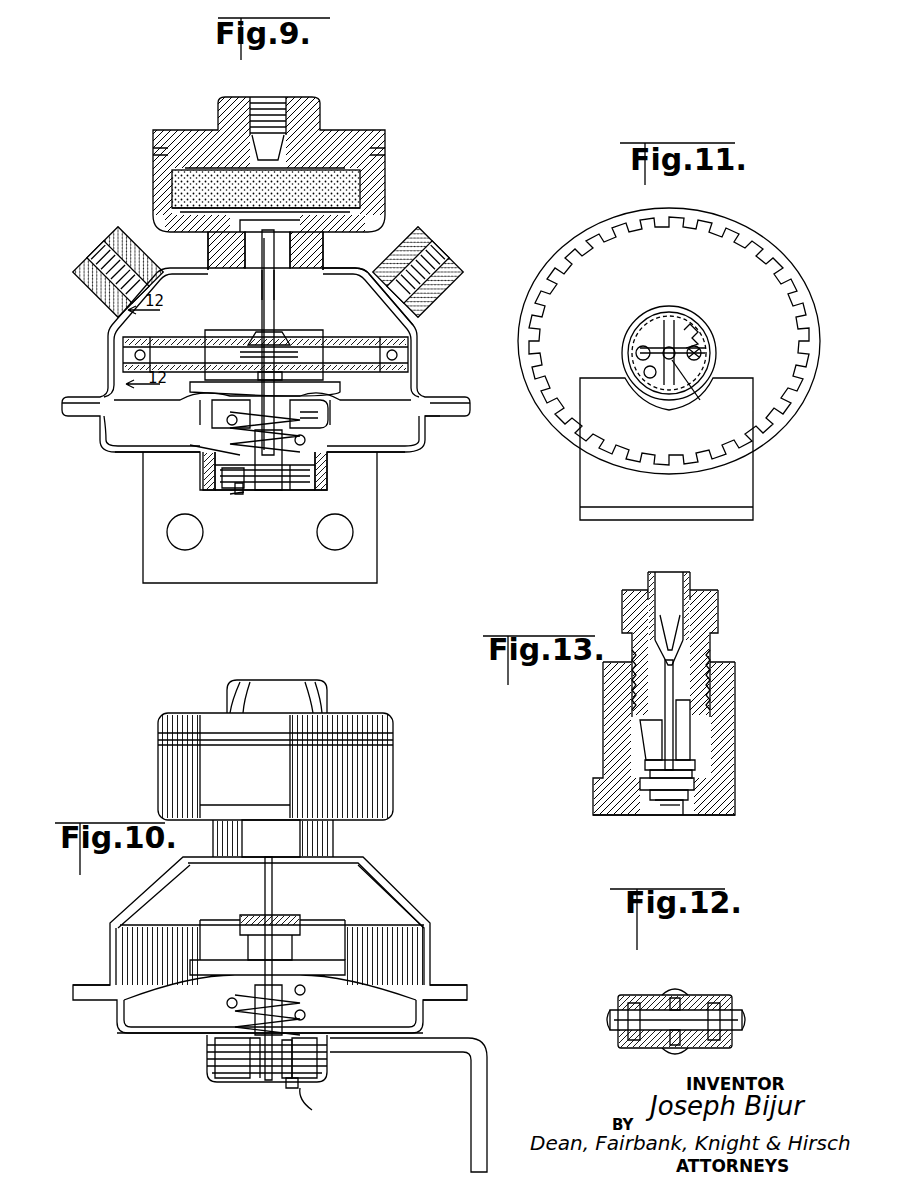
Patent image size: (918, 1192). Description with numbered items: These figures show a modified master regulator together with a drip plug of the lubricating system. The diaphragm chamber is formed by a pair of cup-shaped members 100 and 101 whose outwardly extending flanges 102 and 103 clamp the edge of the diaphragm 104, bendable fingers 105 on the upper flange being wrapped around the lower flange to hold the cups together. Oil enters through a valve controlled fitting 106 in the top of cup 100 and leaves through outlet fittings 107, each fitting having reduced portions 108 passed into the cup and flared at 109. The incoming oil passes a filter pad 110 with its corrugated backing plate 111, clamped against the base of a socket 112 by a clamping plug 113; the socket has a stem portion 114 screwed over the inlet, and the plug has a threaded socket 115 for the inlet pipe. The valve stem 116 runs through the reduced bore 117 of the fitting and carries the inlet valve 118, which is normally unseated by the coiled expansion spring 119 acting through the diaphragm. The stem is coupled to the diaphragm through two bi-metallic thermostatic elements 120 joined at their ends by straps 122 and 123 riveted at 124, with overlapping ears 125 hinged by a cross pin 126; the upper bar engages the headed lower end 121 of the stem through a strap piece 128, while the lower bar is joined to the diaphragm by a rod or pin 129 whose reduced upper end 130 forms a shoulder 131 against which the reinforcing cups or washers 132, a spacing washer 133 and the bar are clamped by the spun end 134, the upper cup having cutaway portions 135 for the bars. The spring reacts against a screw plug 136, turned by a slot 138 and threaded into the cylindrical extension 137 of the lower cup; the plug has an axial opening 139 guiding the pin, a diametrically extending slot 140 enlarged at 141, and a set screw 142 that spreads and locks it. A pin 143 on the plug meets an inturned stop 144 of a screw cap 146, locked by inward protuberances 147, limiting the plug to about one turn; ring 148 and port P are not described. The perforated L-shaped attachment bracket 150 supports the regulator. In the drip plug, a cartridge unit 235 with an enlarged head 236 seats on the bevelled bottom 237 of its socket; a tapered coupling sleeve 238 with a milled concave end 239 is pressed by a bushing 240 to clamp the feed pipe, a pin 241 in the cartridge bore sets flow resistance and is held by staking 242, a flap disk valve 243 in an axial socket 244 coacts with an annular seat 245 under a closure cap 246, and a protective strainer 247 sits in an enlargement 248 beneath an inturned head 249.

In FIG. 9, the cup-shaped member 100 is at (425, 355).
In FIG. 10, the cup-shaped member 100 is at (418, 912).
In FIG. 9, the cup-shaped member 101 is at (405, 450).
In FIG. 10, the cup-shaped member 101 is at (378, 1035).
In FIG. 9, the outwardly extending flange 102 is at (445, 397).
In FIG. 10, the outwardly extending flange 102 is at (458, 988).
In FIG. 9, the outwardly extending flange 103 is at (432, 420).
In FIG. 10, the outwardly extending flange 103 is at (448, 1005).
In FIG. 9, the diaphragm 104 is at (372, 400).
In FIG. 10, the diaphragm 104 is at (350, 985).
In FIG. 11, the bendable fingers 105 is at (798, 286).
In FIG. 9, the valve controlled fitting 106 is at (298, 258).
In FIG. 10, the valve controlled fitting 106 is at (268, 852).
In FIG. 9, the outlet fittings 107 is at (92, 282).
In FIG. 9, the reduced portions 108 is at (365, 300).
In FIG. 9, the flared portion 109 is at (408, 327).
In FIG. 9, the filter pad 110 is at (172, 186).
In FIG. 9, the corrugated backing plate 111 is at (178, 210).
In FIG. 9, the socket 112 is at (372, 218).
In FIG. 10, the socket 112 is at (393, 784).
In FIG. 9, the clamping plug 113 is at (318, 125).
In FIG. 10, the clamping plug 113 is at (330, 697).
In FIG. 9, the stem portion 114 is at (208, 245).
In FIG. 10, the stem portion 114 is at (334, 845).
In FIG. 9, the threaded socket 115 is at (272, 97).
In FIG. 9, the valve stem 116 is at (262, 297).
In FIG. 10, the valve stem 116 is at (265, 880).
In FIG. 9, the reduced bore 117 is at (276, 288).
In FIG. 9, the inlet valve 118 is at (380, 232).
In FIG. 9, the coiled expansion spring 119 is at (232, 276).
In FIG. 10, the coiled expansion spring 119 is at (240, 1020).
In FIG. 9, the bi-metallic thermostatic elements 120 is at (205, 345).
In FIG. 9, the headed lower end 121 is at (282, 338).
In FIG. 12, the strap 122 is at (712, 997).
In FIG. 12, the strap 123 is at (700, 1050).
In FIG. 12, the rivets 124 is at (675, 990).
In FIG. 12, the overlapping ears 125 is at (618, 1036).
In FIG. 9, the cross pin 126 is at (123, 350).
In FIG. 12, the cross pin 126 is at (742, 1016).
In FIG. 10, the strap piece 128 is at (250, 918).
In FIG. 9, the rod or pin 129 is at (282, 490).
In FIG. 11, the rod or pin 129 is at (668, 378).
In FIG. 10, the rod or pin 129 is at (232, 1035).
In FIG. 9, the reduced upper end 130 is at (296, 412).
In FIG. 9, the shoulder 131 is at (238, 400).
In FIG. 9, the reinforcing cups or washers 132 is at (200, 410).
In FIG. 9, the spacing washer 133 is at (325, 368).
In FIG. 9, the spun end 134 is at (242, 348).
In FIG. 9, the cutaway portions 135 is at (300, 340).
In FIG. 10, the cutaway portions 135 is at (305, 925).
In FIG. 9, the screw plug 136 is at (232, 490).
In FIG. 11, the screw plug 136 is at (660, 325).
In FIG. 10, the screw plug 136 is at (228, 1080).
In FIG. 9, the cylindrical extension 137 is at (210, 488).
In FIG. 10, the cylindrical extension 137 is at (310, 1080).
In FIG. 11, the slot 138 is at (675, 330).
In FIG. 9, the axial opening 139 is at (200, 452).
In FIG. 11, the axial opening 139 is at (672, 362).
In FIG. 9, the diametrically extending slot 140 is at (292, 430).
In FIG. 11, the diametrically extending slot 140 is at (652, 348).
In FIG. 10, the diametrically extending slot 140 is at (292, 1090).
In FIG. 9, the enlargement 141 is at (250, 492).
In FIG. 11, the enlargement 141 is at (636, 352).
In FIG. 9, the set screw 142 is at (298, 495).
In FIG. 11, the set screw 142 is at (702, 352).
In FIG. 10, the set screw 142 is at (264, 1085).
In FIG. 9, the pin 143 is at (248, 500).
In FIG. 11, the pin 143 is at (646, 380).
In FIG. 10, the pin 143 is at (312, 1110).
In FIG. 11, the inturned stop 144 is at (692, 338).
In FIG. 10, the inturned stop 144 is at (246, 1085).
In FIG. 9, the screw cap 146 is at (322, 480).
In FIG. 10, the screw cap 146 is at (207, 1068).
In FIG. 9, the inward protuberances 147 is at (327, 468).
In FIG. 9, the packing ring 148 is at (203, 473).
In FIG. 9, the L-shaped attachment bracket 150 is at (362, 545).
In FIG. 11, the L-shaped attachment bracket 150 is at (666, 449).
In FIG. 10, the L-shaped attachment bracket 150 is at (488, 1150).
In FIG. 13, the pipe P is at (690, 575).
In FIG. 13, the cartridge unit 235 is at (692, 745).
In FIG. 13, the enlarged head 236 is at (690, 795).
In FIG. 13, the bevelled bottom 237 is at (625, 812).
In FIG. 13, the tapered coupling sleeve 238 is at (712, 720).
In FIG. 13, the milled concave end 239 is at (640, 752).
In FIG. 13, the bushing 240 is at (712, 648).
In FIG. 13, the pin 241 is at (665, 700).
In FIG. 13, the staking 242 is at (640, 784).
In FIG. 13, the flap disk valve 243 is at (680, 800).
In FIG. 13, the axial socket 244 is at (692, 779).
In FIG. 13, the annular seat 245 is at (695, 768).
In FIG. 13, the closure cap 246 is at (660, 805).
In FIG. 13, the protective strainer 247 is at (655, 640).
In FIG. 13, the enlargement 248 is at (705, 672).
In FIG. 13, the inturned head 249 is at (700, 636).